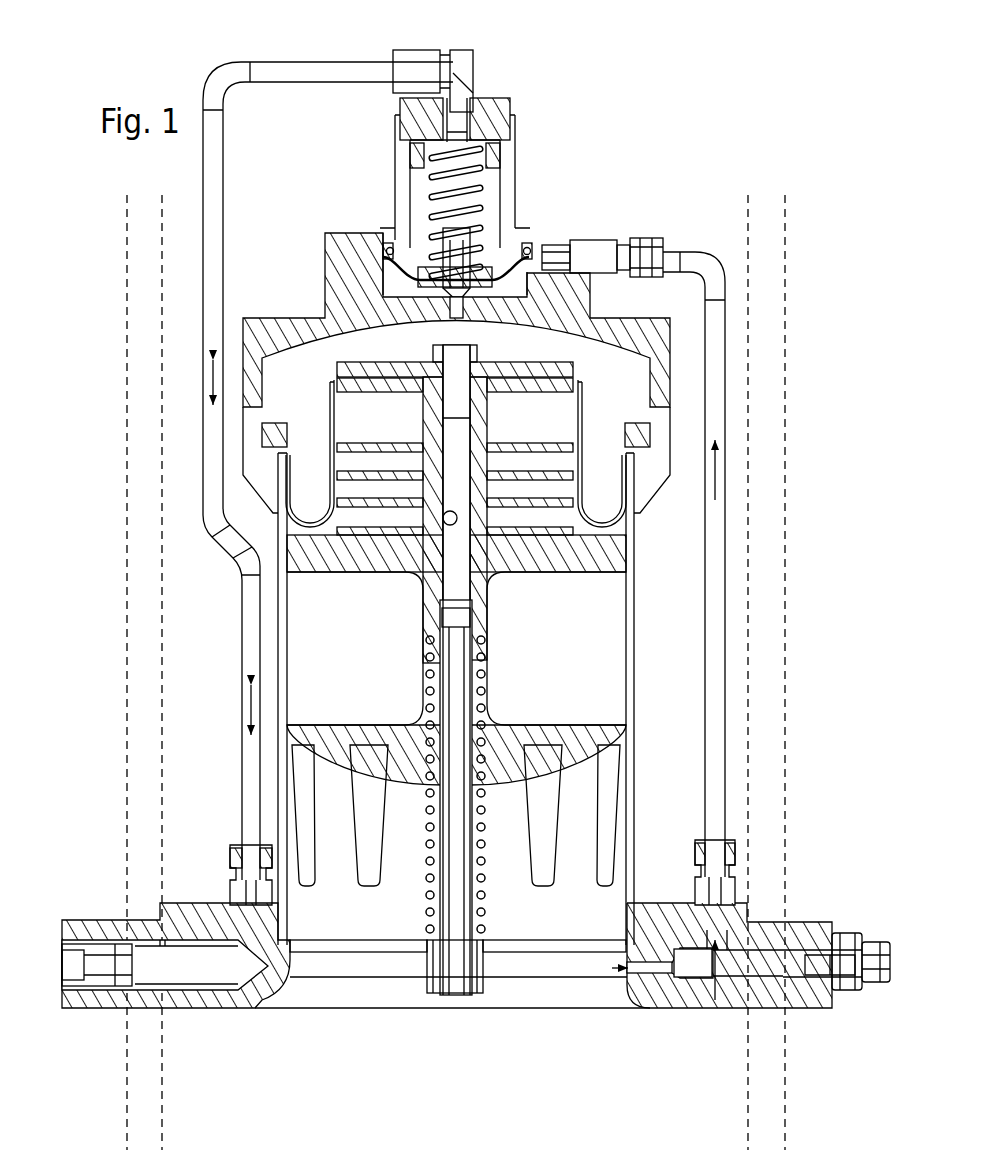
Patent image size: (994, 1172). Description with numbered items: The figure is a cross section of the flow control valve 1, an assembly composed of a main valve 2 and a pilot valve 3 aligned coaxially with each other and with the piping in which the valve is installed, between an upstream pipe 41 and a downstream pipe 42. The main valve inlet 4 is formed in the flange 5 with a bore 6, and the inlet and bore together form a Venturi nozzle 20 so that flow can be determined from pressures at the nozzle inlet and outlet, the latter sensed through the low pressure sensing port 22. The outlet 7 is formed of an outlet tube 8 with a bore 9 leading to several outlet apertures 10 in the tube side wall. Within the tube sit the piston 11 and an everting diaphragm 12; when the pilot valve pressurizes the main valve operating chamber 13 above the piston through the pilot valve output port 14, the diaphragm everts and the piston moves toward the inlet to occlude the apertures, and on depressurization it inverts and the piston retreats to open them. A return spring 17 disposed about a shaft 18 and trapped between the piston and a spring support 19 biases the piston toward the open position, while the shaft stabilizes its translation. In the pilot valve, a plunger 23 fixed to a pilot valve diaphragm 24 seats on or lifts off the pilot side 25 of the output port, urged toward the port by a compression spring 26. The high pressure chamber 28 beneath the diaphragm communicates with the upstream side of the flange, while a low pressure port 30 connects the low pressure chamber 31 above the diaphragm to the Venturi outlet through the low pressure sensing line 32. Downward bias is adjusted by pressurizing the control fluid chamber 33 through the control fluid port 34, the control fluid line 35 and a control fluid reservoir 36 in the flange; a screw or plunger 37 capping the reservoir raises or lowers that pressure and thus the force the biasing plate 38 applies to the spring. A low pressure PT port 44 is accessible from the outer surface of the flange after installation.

The flow control valve 1 is at (668, 126).
The main valve 2 is at (636, 655).
The pilot valve 3 is at (500, 183).
The main valve inlet 4 is at (476, 983).
The flange 5 is at (90, 1012).
The bore 6 is at (306, 1007).
The outlet 7 is at (655, 812).
The outlet tube 8 is at (634, 782).
The bore 9 is at (373, 912).
The outlet apertures 10 is at (351, 812).
The piston 11 is at (528, 722).
The everting diaphragm 12 is at (327, 470).
The main valve operating chamber 13 is at (318, 391).
The pilot valve output port 14 is at (468, 315).
The return spring 17 is at (482, 784).
The shaft 18 is at (484, 898).
The spring support 19 is at (372, 955).
The Venturi nozzle 20 is at (585, 1001).
The low pressure sensing port 22 is at (612, 965).
The plunger 23 is at (456, 305).
The pilot valve diaphragm 24 is at (512, 262).
The pilot side 25 is at (512, 300).
The compression spring 26 is at (482, 222).
The high pressure chamber 28 is at (385, 248).
The low pressure port 30 is at (536, 262).
The low pressure chamber 31 is at (418, 222).
The low pressure sensing line 32 is at (727, 362).
The control fluid chamber 33 is at (512, 138).
The control fluid port 34 is at (470, 120).
The control fluid line 35 is at (203, 160).
The control fluid reservoir 36 is at (225, 979).
The screw or plunger 37 is at (183, 1000).
The biasing plate 38 is at (490, 136).
The upstream pipe 41 is at (162, 1118).
The downstream pipe 42 is at (163, 660).
The low pressure PT port 44 is at (868, 937).